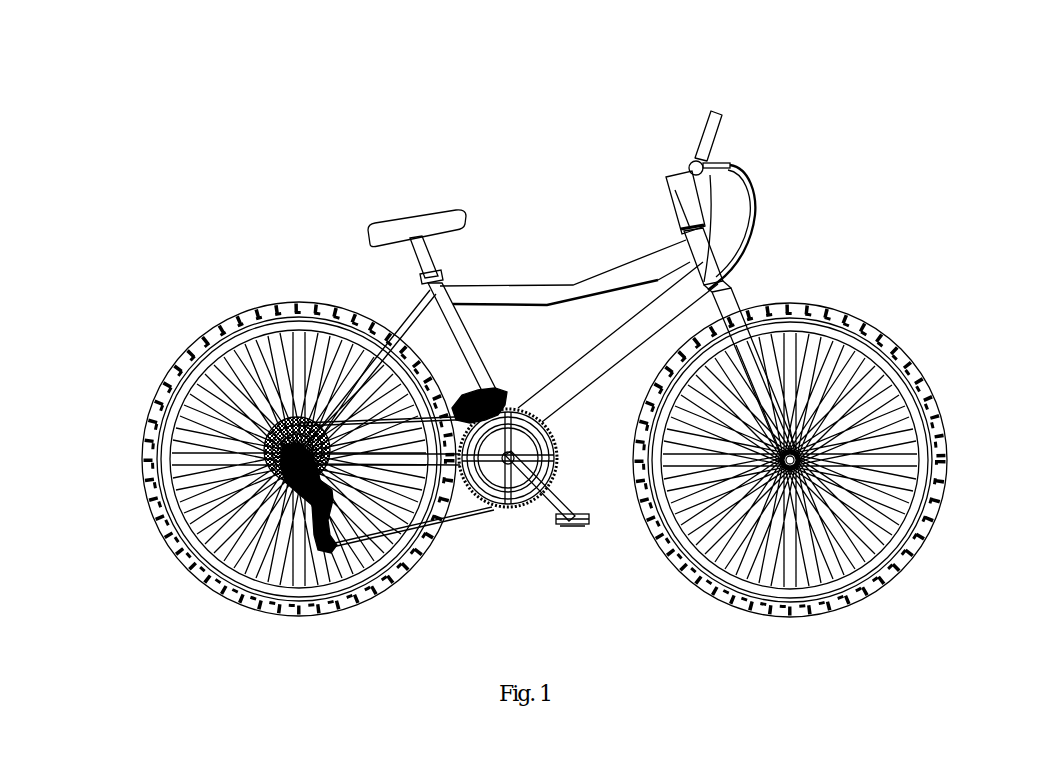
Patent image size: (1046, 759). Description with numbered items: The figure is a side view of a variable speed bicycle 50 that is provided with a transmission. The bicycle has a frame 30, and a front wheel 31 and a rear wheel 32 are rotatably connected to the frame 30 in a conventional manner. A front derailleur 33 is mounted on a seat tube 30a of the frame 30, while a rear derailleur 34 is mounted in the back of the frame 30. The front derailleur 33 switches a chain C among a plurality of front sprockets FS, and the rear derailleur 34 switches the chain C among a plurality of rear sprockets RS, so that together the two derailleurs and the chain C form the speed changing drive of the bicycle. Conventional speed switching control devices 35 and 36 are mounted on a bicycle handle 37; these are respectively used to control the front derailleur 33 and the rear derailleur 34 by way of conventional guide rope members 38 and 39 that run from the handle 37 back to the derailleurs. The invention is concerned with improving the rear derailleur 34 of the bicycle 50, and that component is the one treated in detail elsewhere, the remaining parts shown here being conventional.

The variable speed bicycle 50 is at (548, 150).
The frame 30 is at (540, 296).
The seat tube 30a is at (467, 347).
The front wheel 31 is at (885, 338).
The rear wheel 32 is at (173, 362).
The front derailleur 33 is at (492, 390).
The rear derailleur 34 is at (290, 538).
The speed switching control device 35 is at (705, 163).
The speed switching control device 36 is at (716, 165).
The bicycle handle 37 is at (688, 170).
The guide rope member 38 is at (754, 207).
The guide rope member 39 is at (725, 216).
The rear sprockets RS is at (270, 412).
The front sprockets FS is at (566, 438).
The chain C is at (452, 522).